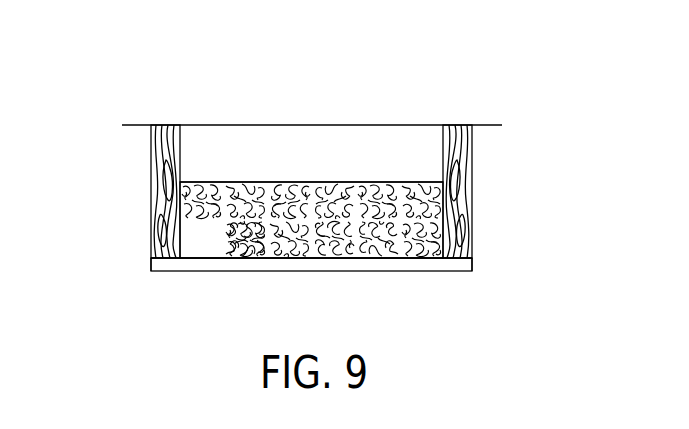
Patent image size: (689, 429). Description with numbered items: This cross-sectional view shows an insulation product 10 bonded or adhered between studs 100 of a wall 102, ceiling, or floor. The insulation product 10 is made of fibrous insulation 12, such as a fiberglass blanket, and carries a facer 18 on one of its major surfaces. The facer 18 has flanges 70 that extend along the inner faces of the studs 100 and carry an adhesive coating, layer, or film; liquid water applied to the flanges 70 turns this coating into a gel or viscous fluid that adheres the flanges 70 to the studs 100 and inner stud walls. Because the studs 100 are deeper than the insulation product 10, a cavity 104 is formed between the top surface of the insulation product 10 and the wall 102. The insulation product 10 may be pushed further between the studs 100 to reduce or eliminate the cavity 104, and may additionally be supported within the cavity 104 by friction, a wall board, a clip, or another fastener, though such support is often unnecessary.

The insulation product 10 is at (245, 286).
The fibrous insulation 12 is at (362, 210).
The facer 18 is at (310, 272).
The flanges 70 is at (151, 273).
The studs 100 is at (153, 195).
The wall 102 is at (485, 125).
The cavity 104 is at (315, 150).